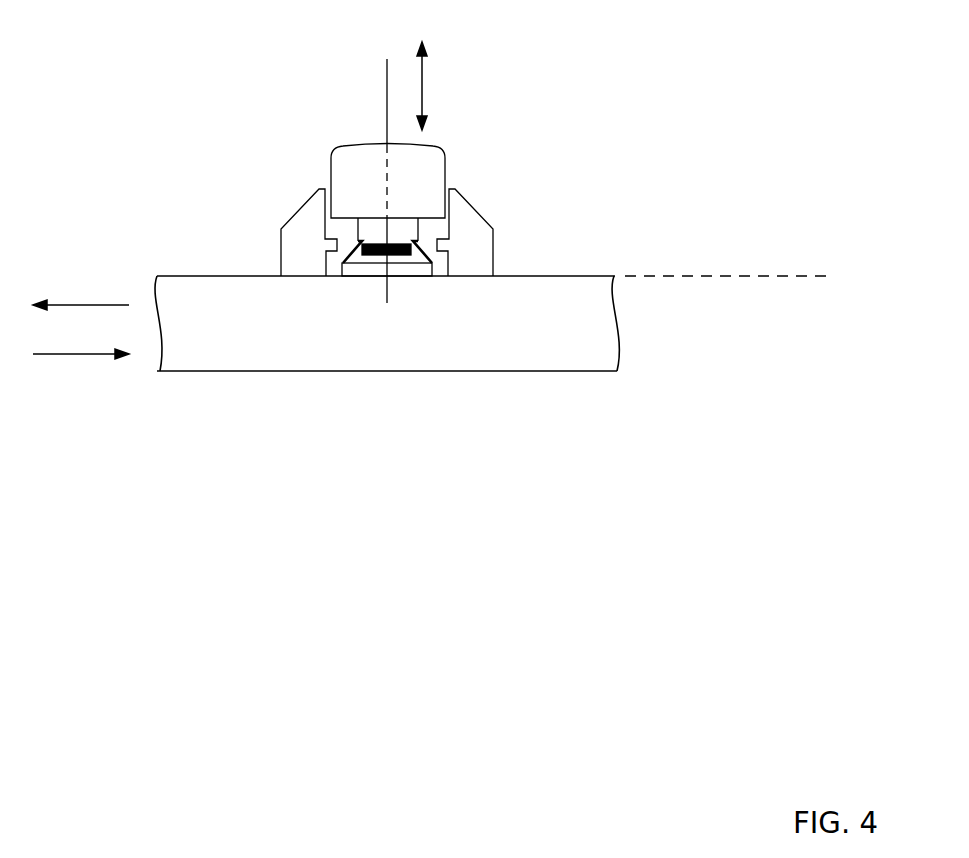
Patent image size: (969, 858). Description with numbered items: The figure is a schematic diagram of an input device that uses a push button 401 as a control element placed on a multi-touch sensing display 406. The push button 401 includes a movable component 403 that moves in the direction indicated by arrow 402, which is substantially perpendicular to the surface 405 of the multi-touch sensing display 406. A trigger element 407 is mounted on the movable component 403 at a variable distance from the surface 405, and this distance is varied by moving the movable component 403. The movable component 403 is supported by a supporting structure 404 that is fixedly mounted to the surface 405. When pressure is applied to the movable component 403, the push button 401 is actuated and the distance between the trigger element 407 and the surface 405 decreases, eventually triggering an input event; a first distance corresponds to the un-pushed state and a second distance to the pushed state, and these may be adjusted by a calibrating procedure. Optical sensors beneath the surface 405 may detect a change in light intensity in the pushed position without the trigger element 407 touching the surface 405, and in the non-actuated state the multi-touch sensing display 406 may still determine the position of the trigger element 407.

The push button 401 is at (183, 144).
The arrow 402 is at (422, 73).
The movable component 403 is at (445, 160).
The supporting structure 404 is at (493, 237).
The surface 405 is at (731, 276).
The multi-touch sensing display 406 is at (382, 343).
The trigger element 407 is at (378, 256).